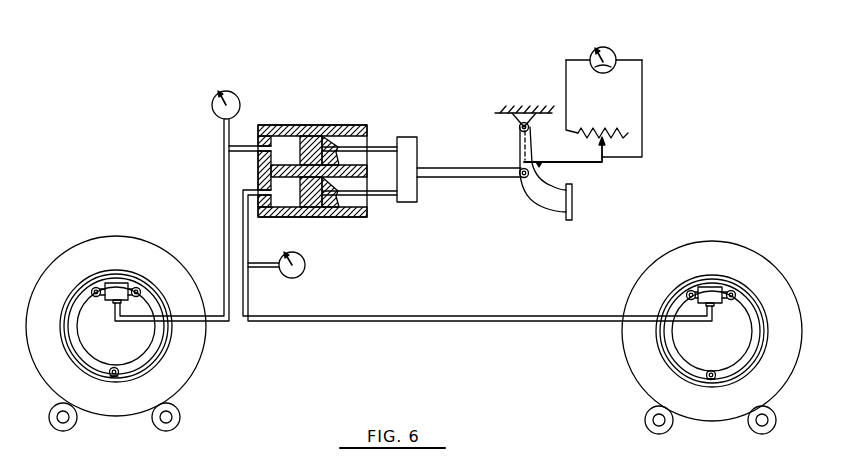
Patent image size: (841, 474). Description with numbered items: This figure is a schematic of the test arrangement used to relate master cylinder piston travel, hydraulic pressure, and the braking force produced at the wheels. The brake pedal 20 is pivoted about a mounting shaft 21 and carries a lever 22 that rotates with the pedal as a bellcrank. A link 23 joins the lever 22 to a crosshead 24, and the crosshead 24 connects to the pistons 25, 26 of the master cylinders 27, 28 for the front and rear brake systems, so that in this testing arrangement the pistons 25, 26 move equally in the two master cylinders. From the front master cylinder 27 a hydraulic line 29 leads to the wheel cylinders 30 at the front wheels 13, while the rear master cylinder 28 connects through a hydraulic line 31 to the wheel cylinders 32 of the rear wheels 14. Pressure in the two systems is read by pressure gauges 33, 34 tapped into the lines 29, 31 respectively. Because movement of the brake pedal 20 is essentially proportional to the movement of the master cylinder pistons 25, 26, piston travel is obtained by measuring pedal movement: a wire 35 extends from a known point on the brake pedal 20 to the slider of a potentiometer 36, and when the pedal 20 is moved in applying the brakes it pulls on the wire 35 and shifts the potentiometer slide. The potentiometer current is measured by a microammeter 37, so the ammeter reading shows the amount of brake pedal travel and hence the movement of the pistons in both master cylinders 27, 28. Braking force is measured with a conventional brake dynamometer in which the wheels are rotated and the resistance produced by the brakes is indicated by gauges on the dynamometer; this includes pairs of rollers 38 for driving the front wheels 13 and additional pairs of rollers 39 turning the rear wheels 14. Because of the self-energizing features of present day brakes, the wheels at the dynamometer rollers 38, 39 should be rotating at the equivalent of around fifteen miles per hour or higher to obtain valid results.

The front wheels 13 is at (83, 283).
The rear wheels 14 is at (760, 306).
The brake pedal 20 is at (545, 184).
The mounting shaft 21 is at (519, 128).
The lever 22 is at (519, 156).
The link 23 is at (440, 178).
The crosshead 24 is at (407, 147).
The piston 25 is at (315, 150).
The piston 26 is at (310, 205).
The master cylinder 27 is at (335, 125).
The master cylinder 28 is at (350, 214).
The hydraulic line 29 is at (222, 236).
The wheel cylinders 30 is at (122, 291).
The hydraulic line 31 is at (523, 323).
The wheel cylinders 32 is at (712, 292).
The pressure gauge 33 is at (227, 91).
The pressure gauge 34 is at (305, 255).
The wire 35 is at (576, 165).
The potentiometer 36 is at (598, 130).
The microammeter 37 is at (614, 49).
The rollers 38 is at (145, 424).
The rollers 39 is at (749, 425).